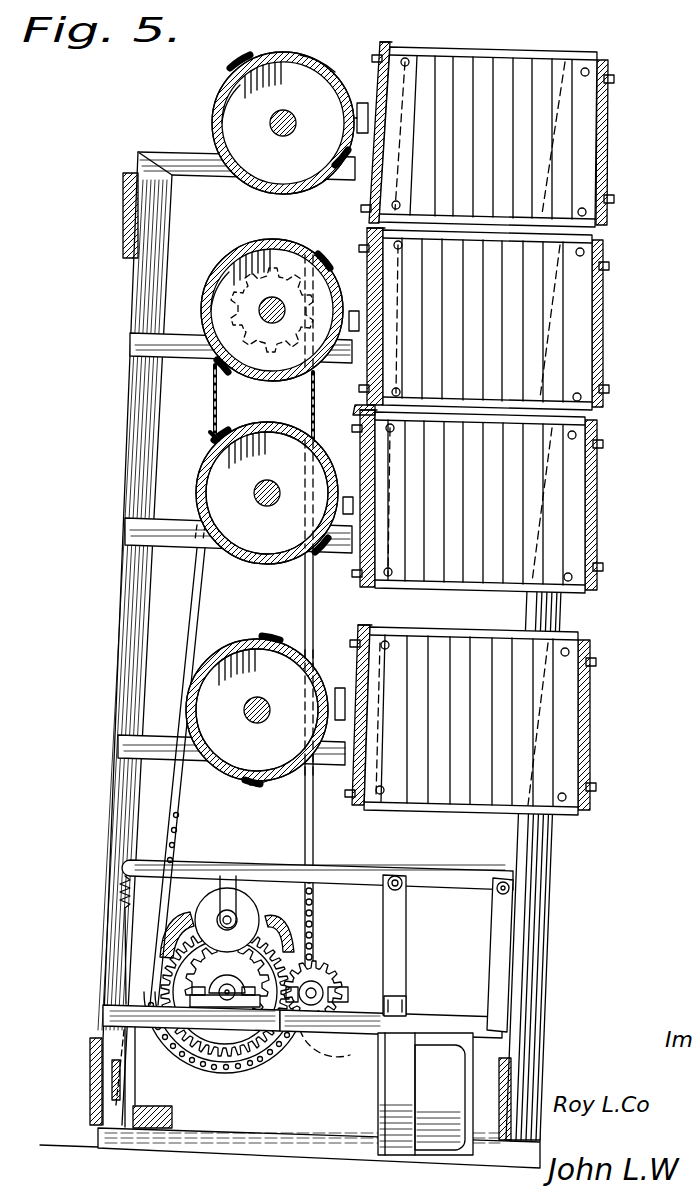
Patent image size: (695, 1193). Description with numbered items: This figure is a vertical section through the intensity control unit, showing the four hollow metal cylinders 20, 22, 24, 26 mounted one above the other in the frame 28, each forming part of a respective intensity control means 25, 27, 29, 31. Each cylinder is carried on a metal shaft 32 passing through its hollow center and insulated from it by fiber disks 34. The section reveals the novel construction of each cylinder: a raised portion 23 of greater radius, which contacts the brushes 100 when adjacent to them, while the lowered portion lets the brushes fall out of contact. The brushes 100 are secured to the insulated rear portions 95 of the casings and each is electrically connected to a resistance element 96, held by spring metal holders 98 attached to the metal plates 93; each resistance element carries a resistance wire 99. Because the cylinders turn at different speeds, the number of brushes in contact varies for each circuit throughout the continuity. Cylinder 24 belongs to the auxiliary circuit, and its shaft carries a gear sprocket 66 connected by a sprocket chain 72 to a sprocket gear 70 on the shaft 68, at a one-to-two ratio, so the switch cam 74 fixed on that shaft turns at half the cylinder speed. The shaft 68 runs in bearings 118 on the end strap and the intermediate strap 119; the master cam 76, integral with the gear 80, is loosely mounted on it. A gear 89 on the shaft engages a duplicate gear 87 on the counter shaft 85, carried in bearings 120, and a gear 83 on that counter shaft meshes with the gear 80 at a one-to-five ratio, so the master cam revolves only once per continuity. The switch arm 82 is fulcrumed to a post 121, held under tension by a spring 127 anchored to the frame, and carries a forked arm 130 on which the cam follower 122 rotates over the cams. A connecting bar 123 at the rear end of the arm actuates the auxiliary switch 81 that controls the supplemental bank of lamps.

The hollow cylinder 20 is at (253, 784).
The hollow cylinder 22 is at (212, 433).
The raised portion 23 is at (272, 53).
The hollow cylinder 24 is at (256, 258).
The intensity control means 25 is at (158, 706).
The hollow cylinder 26 is at (318, 62).
The intensity control means 27 is at (194, 474).
The frame 28 is at (90, 1060).
The intensity control means 29 is at (201, 283).
The intensity control means 31 is at (205, 119).
The metal shaft 32 is at (270, 421).
The fiber disk 34 is at (268, 377).
The gear sprocket 66 is at (308, 420).
The shaft 68 is at (227, 985).
The sprocket gear 70 is at (160, 935).
The sprocket chain 72 is at (213, 372).
The switch cam 74 is at (283, 1054).
The master cam 76 is at (196, 1056).
The gear 80 is at (200, 972).
The auxiliary switch 81 is at (508, 1086).
The switch arm 82 is at (330, 870).
The gear 83 is at (348, 1058).
The counter shaft 85 is at (313, 1010).
The gear 87 is at (330, 968).
The gear 89 is at (235, 1068).
The metal plate 93 is at (606, 158).
The insulated rear portion 95 is at (357, 410).
The resistance element 96 is at (565, 128).
The spring metal holder 98 is at (603, 360).
The resistance wire 99 is at (580, 548).
The brush 100 is at (356, 120).
The bearing 118 is at (190, 1004).
The intermediate strap 119 is at (391, 1024).
The bearing 120 is at (402, 1000).
The post 121 is at (402, 905).
The cam follower 122 is at (216, 876).
The connecting bar 123 is at (506, 905).
The spring 127 is at (120, 893).
The forked arm 130 is at (240, 905).